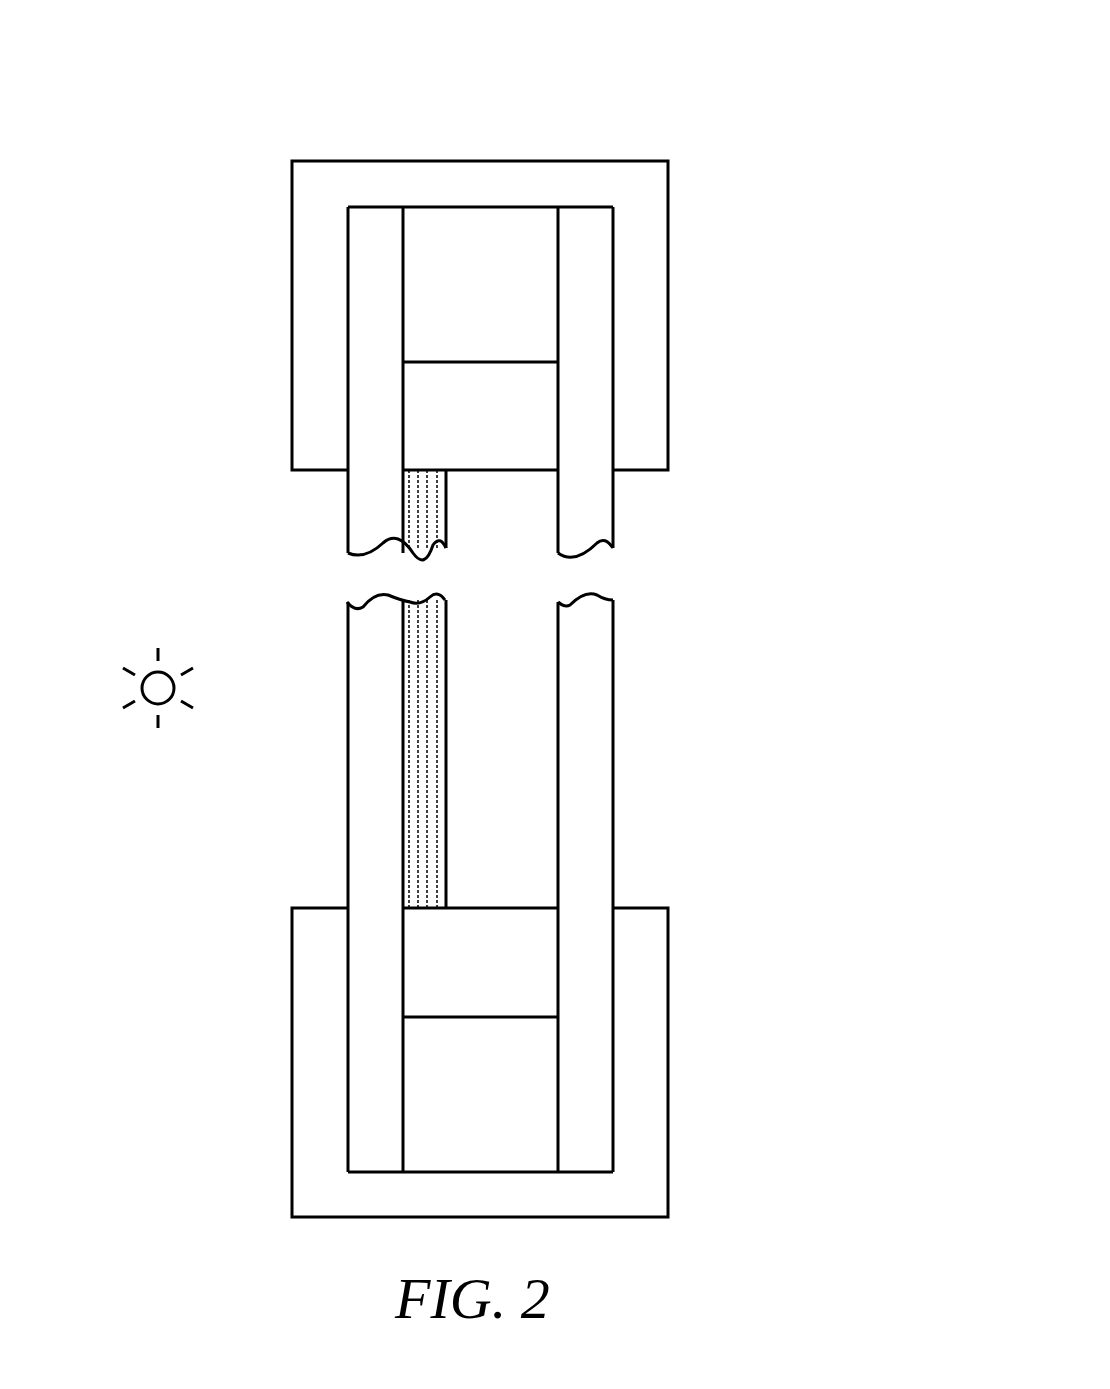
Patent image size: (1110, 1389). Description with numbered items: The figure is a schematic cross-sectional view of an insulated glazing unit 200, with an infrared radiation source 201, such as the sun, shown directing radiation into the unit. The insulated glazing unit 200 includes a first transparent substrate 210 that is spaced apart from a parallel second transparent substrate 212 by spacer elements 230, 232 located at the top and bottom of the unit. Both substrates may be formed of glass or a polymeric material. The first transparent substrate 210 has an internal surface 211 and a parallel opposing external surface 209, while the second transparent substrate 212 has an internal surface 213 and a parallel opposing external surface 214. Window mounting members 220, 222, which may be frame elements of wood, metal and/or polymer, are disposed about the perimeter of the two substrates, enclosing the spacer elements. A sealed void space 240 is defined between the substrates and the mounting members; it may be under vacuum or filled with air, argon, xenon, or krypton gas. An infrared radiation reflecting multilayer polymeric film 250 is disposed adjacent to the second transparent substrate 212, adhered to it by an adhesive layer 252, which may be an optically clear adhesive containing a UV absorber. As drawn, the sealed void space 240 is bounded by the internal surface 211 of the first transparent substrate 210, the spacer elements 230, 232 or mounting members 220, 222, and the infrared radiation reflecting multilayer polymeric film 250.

The insulated glazing unit 200 is at (646, 77).
The infrared radiation source 201 is at (148, 673).
The external surface 209 is at (614, 757).
The first transparent substrate 210 is at (634, 689).
The internal surface 211 is at (555, 620).
The second transparent substrate 212 is at (339, 689).
The internal surface 213 is at (402, 640).
The external surface 214 is at (347, 770).
The window mounting member 220 is at (648, 1063).
The window mounting member 222 is at (647, 253).
The spacer element 230 is at (540, 962).
The spacer element 232 is at (535, 422).
The sealed void space 240 is at (528, 719).
The infrared radiation reflecting multilayer polymeric film 250 is at (385, 689).
The adhesive layer 252 is at (412, 704).